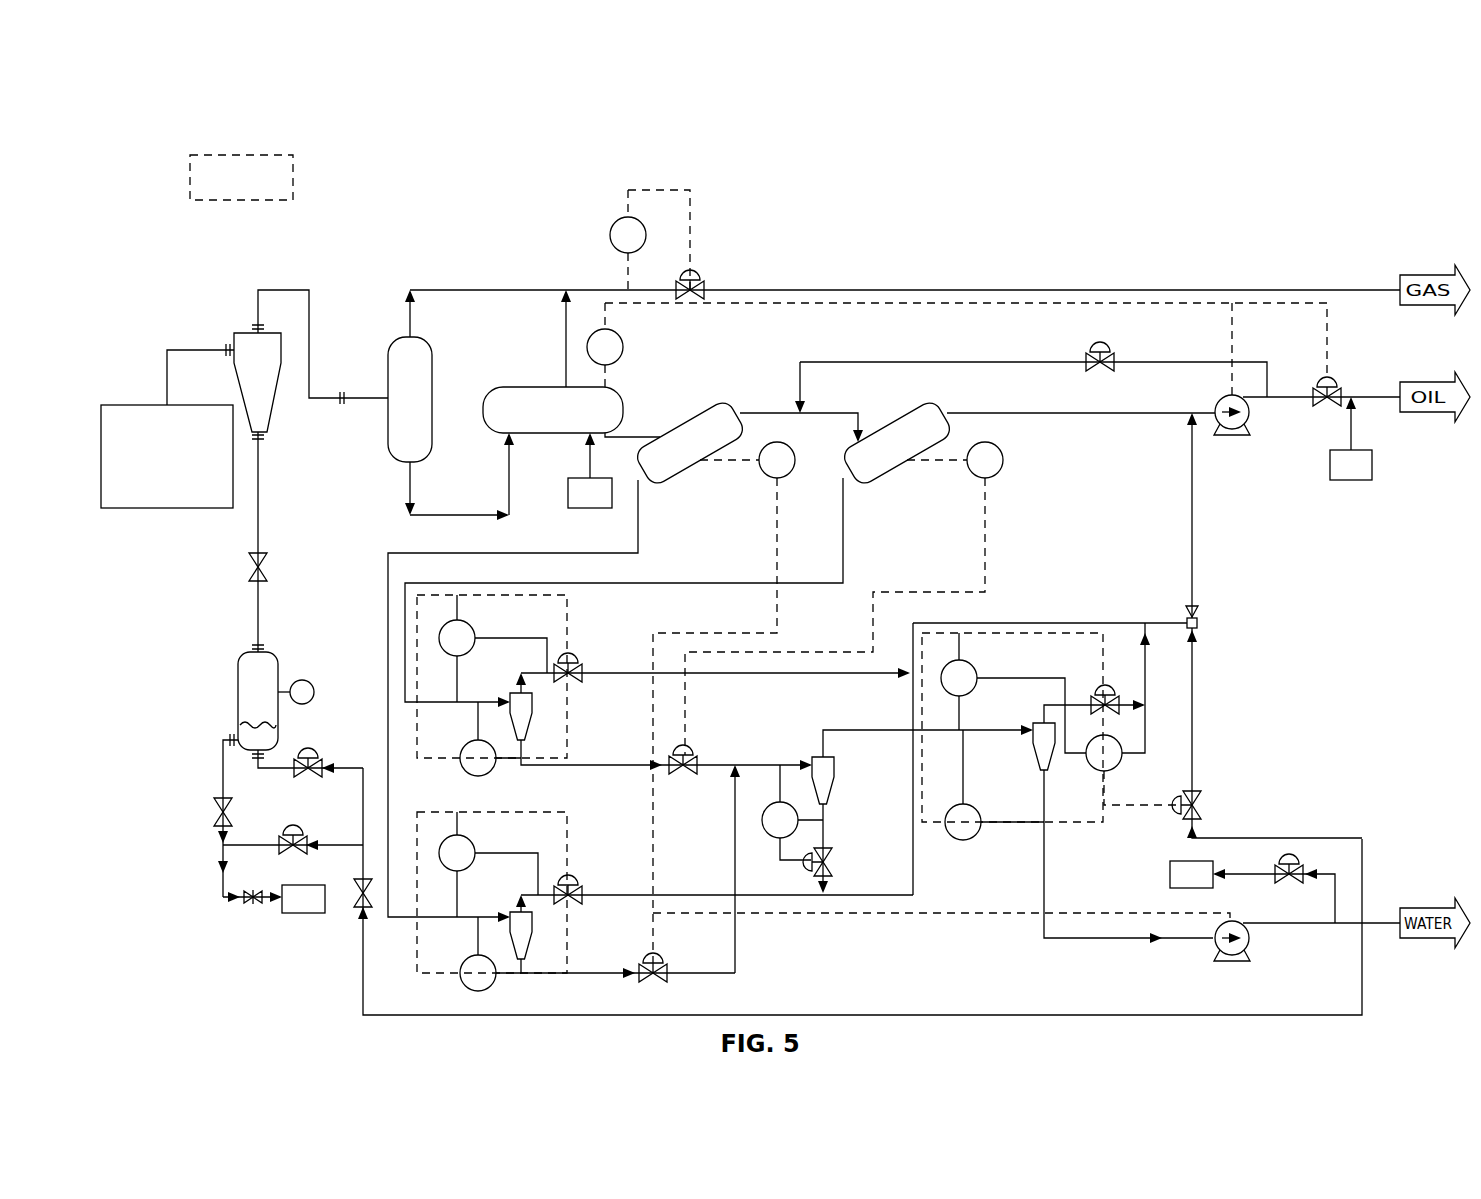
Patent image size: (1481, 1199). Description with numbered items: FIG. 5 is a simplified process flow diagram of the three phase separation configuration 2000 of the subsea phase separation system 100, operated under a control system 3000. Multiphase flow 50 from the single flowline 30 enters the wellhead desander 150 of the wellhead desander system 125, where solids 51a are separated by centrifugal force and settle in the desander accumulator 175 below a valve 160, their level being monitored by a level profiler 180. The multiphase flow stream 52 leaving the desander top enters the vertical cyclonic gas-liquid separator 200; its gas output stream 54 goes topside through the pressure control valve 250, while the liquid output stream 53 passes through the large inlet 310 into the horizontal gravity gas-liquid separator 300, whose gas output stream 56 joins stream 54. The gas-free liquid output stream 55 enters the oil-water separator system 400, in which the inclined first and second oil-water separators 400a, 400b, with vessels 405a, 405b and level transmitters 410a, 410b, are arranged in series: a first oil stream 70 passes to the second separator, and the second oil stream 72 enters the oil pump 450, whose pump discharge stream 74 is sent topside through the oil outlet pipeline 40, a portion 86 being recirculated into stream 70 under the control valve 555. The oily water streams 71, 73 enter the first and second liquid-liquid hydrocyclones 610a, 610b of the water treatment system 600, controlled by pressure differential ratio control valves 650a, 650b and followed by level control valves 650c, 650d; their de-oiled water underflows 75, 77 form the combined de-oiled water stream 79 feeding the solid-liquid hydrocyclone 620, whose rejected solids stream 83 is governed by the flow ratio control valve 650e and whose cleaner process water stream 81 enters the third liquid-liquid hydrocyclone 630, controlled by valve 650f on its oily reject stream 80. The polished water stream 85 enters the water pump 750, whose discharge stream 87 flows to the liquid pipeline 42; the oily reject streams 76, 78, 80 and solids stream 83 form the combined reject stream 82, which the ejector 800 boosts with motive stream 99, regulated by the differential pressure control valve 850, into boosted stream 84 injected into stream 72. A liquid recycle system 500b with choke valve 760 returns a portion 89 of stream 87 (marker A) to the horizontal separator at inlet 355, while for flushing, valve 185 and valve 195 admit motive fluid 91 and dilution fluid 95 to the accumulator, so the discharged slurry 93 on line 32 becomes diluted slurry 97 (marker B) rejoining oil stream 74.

The control system 3000 is at (241, 177).
The subsea phase separation system 100 is at (1037, 190).
The three phase separation configuration 2000 is at (1100, 205).
The multiphase flow 50 is at (160, 405).
The single flowline 30 is at (200, 350).
The wellhead desander 150 is at (275, 410).
The multiphase flow stream 52 is at (272, 290).
The vertical cyclonic gas-liquid separator 200 is at (392, 337).
The vertical separator gas output stream 54 is at (455, 290).
The liquid output stream 53 is at (402, 515).
The large inlet 310 is at (500, 436).
The wellhead desander system 125 is at (285, 492).
The horizontal gravity gas-liquid separator 300 is at (528, 387).
The horizontal separator gas output stream 56 is at (566, 328).
The inlet line 355 is at (578, 436).
The redirected pump discharge stream 89 is at (586, 462).
The pressure control valve 250 is at (698, 282).
The combined horizontal separator liquid output stream 55 is at (612, 432).
The oil-water separator system 400 is at (828, 343).
The first oil-water separator 400a is at (694, 407).
The second oil-water separator 400b is at (897, 418).
The first oil stream 70 is at (757, 413).
The control valve 555 is at (1105, 370).
The second oil stream 72 is at (1020, 413).
The oil pump 450 is at (1220, 403).
The pump discharge stream 74 is at (1258, 400).
The redirected portion of pump discharge stream 86 is at (1267, 372).
The oil outlet pipeline 40 is at (1365, 397).
The diluted slurry 97 is at (1351, 440).
The boosted stream 84 is at (1190, 470).
The level transmitter 410a is at (765, 477).
The level transmitter 410b is at (995, 477).
The vessel 405a is at (666, 488).
The vessel 405b is at (870, 487).
The first remaining oily water stream 71 is at (638, 528).
The second remaining oily water stream 73 is at (843, 560).
The valve 160 is at (266, 565).
The desander accumulator 175 is at (238, 665).
The level profiler 180 is at (308, 682).
The accumulated solids 51a is at (268, 745).
The discharged slurry 93 is at (223, 740).
The line 32 is at (223, 770).
The valve 185 is at (308, 775).
The motive fluid 91 is at (333, 765).
The dilution fluid 95 is at (255, 845).
The control valve 195 is at (298, 852).
The water treatment system 600 is at (380, 626).
The second liquid-liquid hydrocyclone 610b is at (530, 725).
The second oily reject stream 78 is at (553, 668).
The pressure differential ratio control valve 650b is at (570, 680).
The second de-oiled water stream 77 is at (530, 767).
The level control valve 650d is at (686, 775).
The combined de-oiled water stream 79 is at (747, 765).
The solid-liquid hydrocyclone 620 is at (835, 795).
The cleaner process water stream 81 is at (865, 730).
The rejected solids stream 83 is at (823, 830).
The flow ratio control valve 650e is at (835, 862).
The third liquid-liquid hydrocyclone 630 is at (1043, 770).
The third oily reject stream 80 is at (1044, 710).
The pressure differential ratio control valve 650f is at (1100, 685).
The combined reject stream 82 is at (1160, 623).
The ejector 800 is at (1198, 628).
The motive stream 99 is at (1192, 670).
The differential pressure control valve 850 is at (1205, 808).
The polished water stream 85 is at (1044, 925).
The water pump 750 is at (1213, 950).
The pump discharge stream 87 is at (1255, 925).
The choke valve 760 is at (1285, 882).
The liquid recycle system 500b is at (1350, 898).
The liquid pipeline 42 is at (1388, 923).
The first liquid-liquid hydrocyclone 610a is at (530, 945).
The first oily reject stream 76 is at (538, 890).
The pressure differential ratio control valve 650a is at (572, 902).
The first de-oiled water stream 75 is at (530, 980).
The level control valve 650c is at (660, 985).